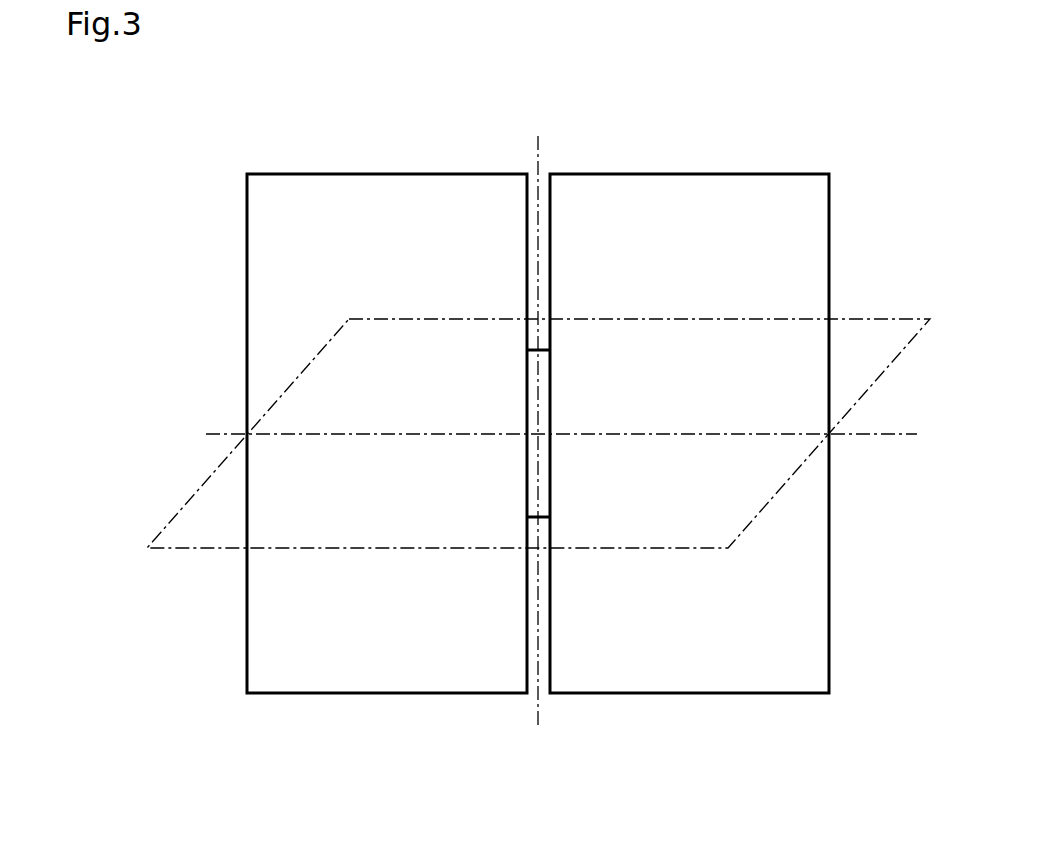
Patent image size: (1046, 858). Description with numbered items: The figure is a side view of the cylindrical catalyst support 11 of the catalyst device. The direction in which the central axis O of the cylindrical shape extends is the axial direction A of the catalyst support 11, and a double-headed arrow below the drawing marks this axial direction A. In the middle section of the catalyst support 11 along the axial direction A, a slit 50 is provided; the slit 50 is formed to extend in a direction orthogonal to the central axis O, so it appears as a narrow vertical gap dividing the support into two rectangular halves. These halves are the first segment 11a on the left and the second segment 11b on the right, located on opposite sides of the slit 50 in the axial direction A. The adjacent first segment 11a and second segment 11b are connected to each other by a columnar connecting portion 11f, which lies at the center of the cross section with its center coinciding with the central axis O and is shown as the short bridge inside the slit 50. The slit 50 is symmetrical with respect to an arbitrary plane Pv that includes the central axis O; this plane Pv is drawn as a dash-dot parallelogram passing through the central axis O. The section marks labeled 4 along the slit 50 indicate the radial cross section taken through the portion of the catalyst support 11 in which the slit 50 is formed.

The catalyst support 11 is at (546, 433).
The first segment 11a is at (262, 658).
The second segment 11b is at (810, 657).
The connecting portion 11f is at (545, 390).
The slit 50 is at (532, 184).
The plane Pv is at (872, 318).
The central axis O is at (220, 433).
The section line for FIG. 4 is at (538, 136).
The axial direction A is at (605, 793).